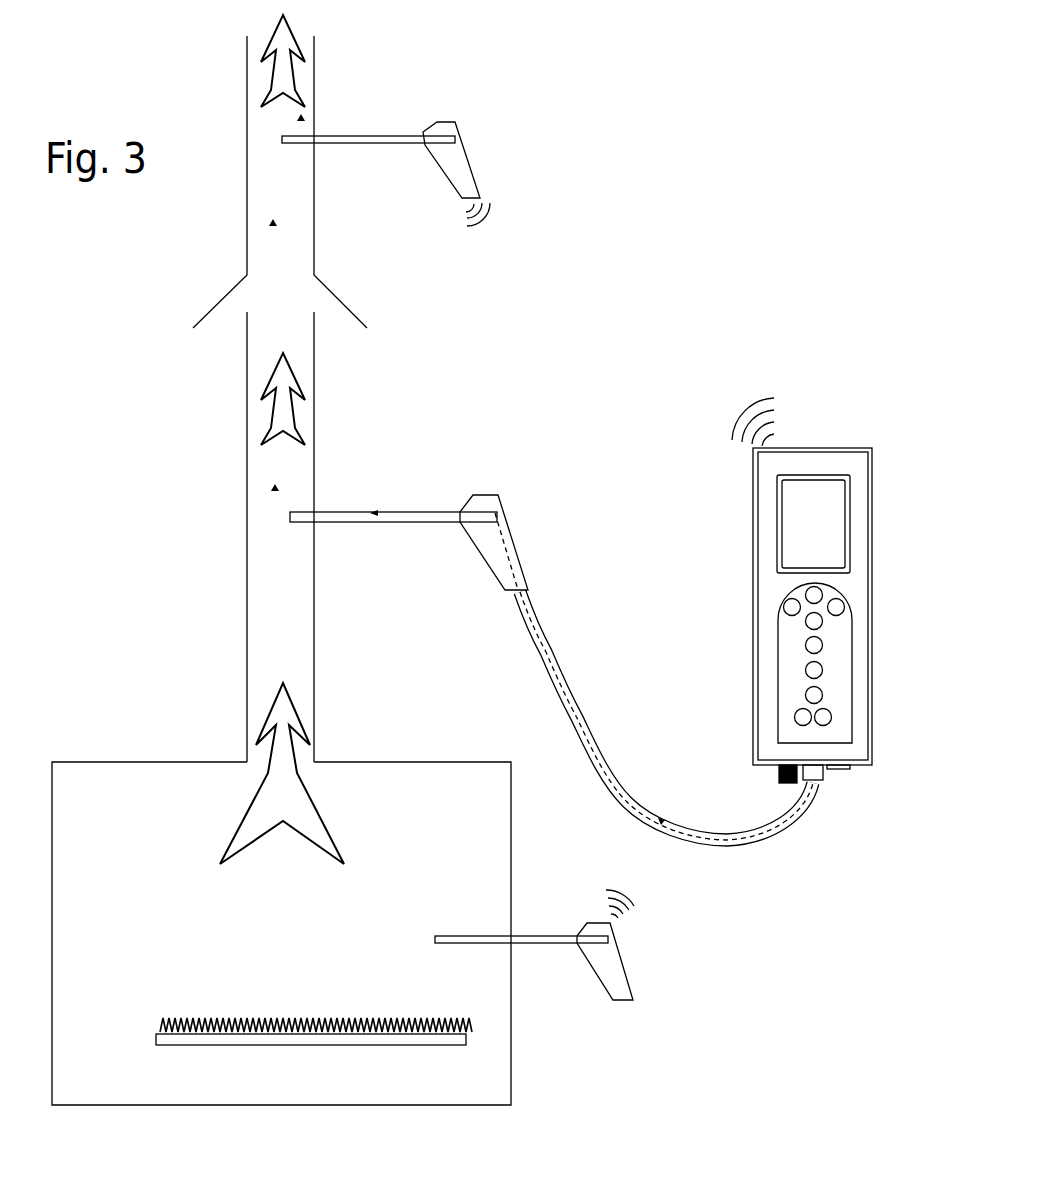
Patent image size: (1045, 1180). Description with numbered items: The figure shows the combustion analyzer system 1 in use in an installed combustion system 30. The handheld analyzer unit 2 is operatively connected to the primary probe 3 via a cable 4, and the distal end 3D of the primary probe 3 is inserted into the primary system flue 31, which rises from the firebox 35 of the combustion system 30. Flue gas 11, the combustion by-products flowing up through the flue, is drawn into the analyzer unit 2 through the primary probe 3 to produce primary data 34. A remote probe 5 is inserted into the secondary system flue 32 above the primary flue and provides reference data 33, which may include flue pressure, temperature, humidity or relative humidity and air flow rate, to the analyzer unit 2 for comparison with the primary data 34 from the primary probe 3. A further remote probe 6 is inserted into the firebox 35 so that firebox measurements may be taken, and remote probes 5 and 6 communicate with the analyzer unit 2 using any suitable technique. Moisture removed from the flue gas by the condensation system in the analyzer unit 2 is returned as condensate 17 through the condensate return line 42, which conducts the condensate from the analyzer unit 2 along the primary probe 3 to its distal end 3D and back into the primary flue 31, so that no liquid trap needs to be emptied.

The combustion analyzer system 1 is at (832, 117).
The analyzer unit 2 is at (860, 464).
The primary probe 3 is at (497, 507).
The distal end 3D is at (293, 525).
The cable 4 is at (795, 825).
The remote probe 5 is at (460, 153).
The remote probe 6 is at (607, 960).
The flue gas 11 is at (301, 802).
The condensate 17 is at (278, 487).
The combustion system 30 is at (147, 622).
The primary system flue 31 is at (312, 608).
The secondary system flue 32 is at (309, 210).
The reference data 33 is at (488, 222).
The primary data 34 is at (629, 809).
The firebox 35 is at (511, 827).
The condensate return line 42 is at (690, 716).